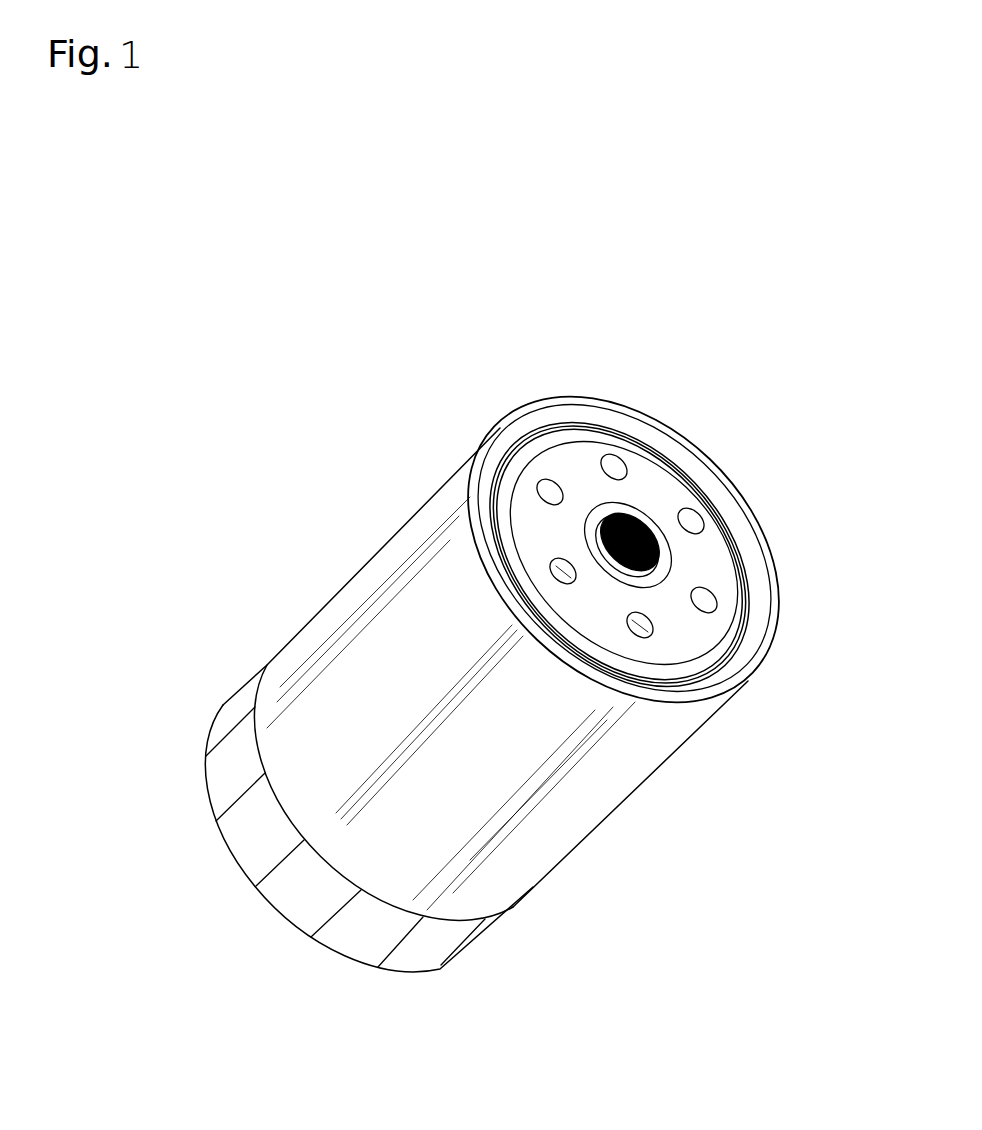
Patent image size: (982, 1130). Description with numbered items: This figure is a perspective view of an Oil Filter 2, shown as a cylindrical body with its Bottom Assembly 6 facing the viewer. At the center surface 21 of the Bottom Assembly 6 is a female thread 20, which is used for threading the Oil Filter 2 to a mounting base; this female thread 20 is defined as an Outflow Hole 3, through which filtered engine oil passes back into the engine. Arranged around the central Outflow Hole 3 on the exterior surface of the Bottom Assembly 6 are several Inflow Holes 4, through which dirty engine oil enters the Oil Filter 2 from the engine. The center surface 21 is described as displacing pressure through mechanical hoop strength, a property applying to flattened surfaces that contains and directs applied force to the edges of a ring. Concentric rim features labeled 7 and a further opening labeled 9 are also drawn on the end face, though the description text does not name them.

The Oil Filter 2 is at (588, 842).
The Outflow Hole 3 is at (592, 545).
The Inflow Holes 4 is at (720, 610).
The Bottom Assembly 6 is at (575, 435).
The end rim 7 is at (527, 430).
The inlet opening 9 is at (627, 463).
The female thread 20 is at (668, 553).
The center surface 21 is at (667, 487).